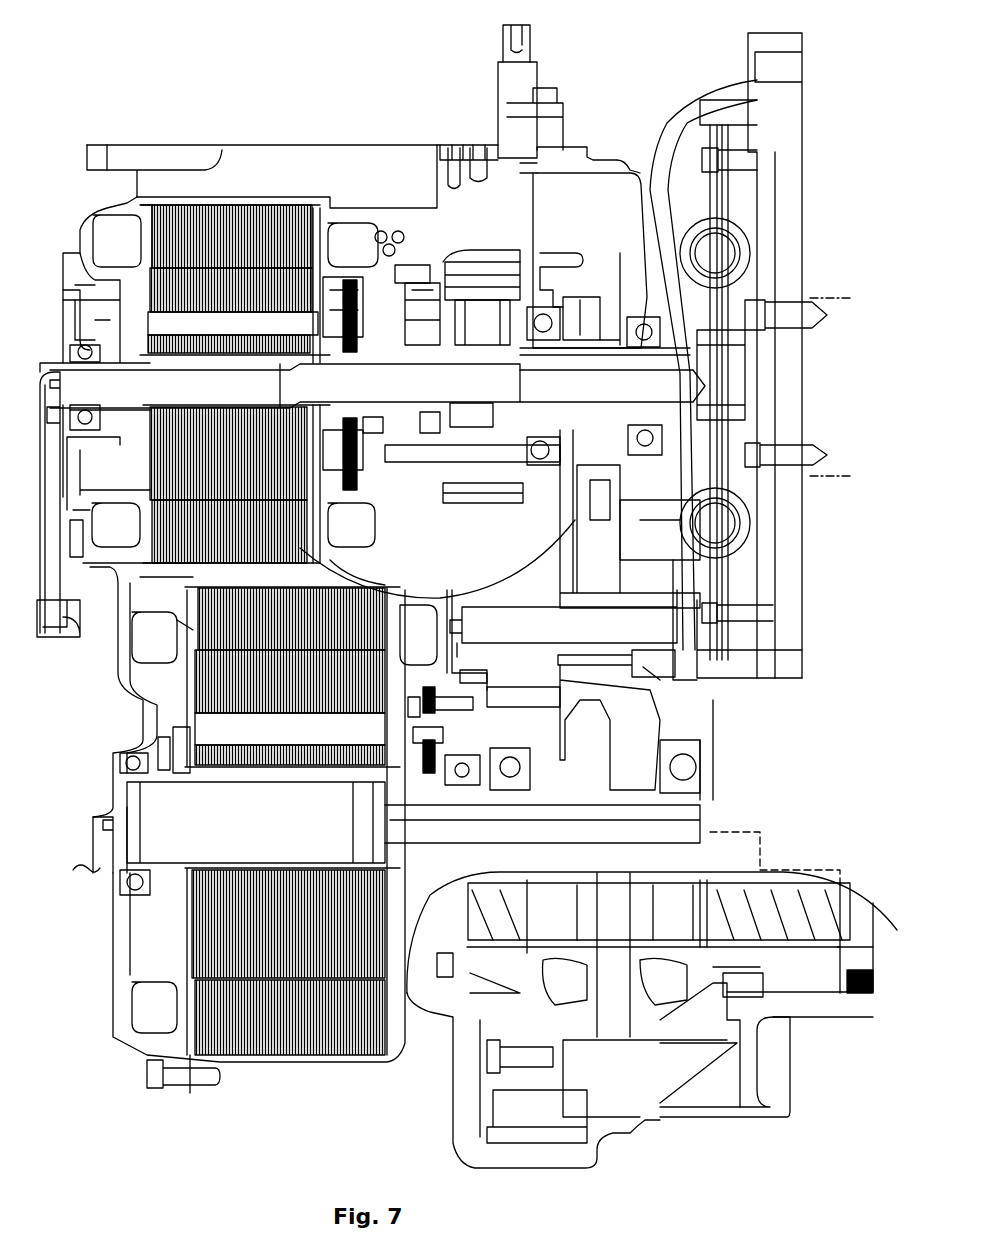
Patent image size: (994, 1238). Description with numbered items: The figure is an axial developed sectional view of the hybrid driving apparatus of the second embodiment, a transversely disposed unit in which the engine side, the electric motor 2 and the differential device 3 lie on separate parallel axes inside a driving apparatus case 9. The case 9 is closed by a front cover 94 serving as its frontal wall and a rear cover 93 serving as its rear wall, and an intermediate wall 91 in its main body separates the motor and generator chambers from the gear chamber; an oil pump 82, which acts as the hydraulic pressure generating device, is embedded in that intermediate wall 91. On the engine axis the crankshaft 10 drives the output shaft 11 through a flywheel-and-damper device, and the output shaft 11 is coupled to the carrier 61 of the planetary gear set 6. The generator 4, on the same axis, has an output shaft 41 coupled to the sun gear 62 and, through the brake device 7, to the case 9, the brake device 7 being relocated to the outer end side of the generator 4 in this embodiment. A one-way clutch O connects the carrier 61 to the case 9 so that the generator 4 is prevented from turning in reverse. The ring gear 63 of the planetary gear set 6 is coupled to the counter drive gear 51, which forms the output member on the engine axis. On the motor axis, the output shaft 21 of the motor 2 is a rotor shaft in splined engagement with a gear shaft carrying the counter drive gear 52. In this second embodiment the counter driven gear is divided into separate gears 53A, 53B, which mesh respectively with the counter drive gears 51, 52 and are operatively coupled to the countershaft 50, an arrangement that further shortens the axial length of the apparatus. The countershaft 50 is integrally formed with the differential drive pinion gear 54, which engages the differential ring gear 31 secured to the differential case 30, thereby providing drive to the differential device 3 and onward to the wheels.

The driving apparatus case 9 is at (365, 148).
The generator 4 is at (130, 214).
The brake device 7 is at (90, 268).
The planetary gear set 6 is at (472, 268).
The one-way clutch O is at (410, 283).
The ring gear 63 is at (568, 257).
The intermediate wall 91 is at (570, 250).
The counter drive gear 51 is at (600, 303).
The front cover 94 is at (685, 100).
The crankshaft 10 is at (820, 300).
The output shaft 11 is at (750, 375).
The sun gear 62 is at (470, 420).
The carrier 61 is at (445, 478).
The output shaft 41 is at (320, 550).
The oil pump 82 is at (545, 555).
The countershaft 50 is at (525, 640).
The rear cover 93 is at (118, 680).
The electric motor 2 is at (152, 917).
The output shaft 21 is at (245, 862).
The counter drive gear 52 is at (723, 835).
The counter driven gear 53A is at (595, 745).
The counter driven gear 53B is at (708, 792).
The differential drive pinion gear 54 is at (497, 678).
The differential device 3 is at (703, 1010).
The differential case 30 is at (575, 1030).
The differential ring gear 31 is at (500, 1118).